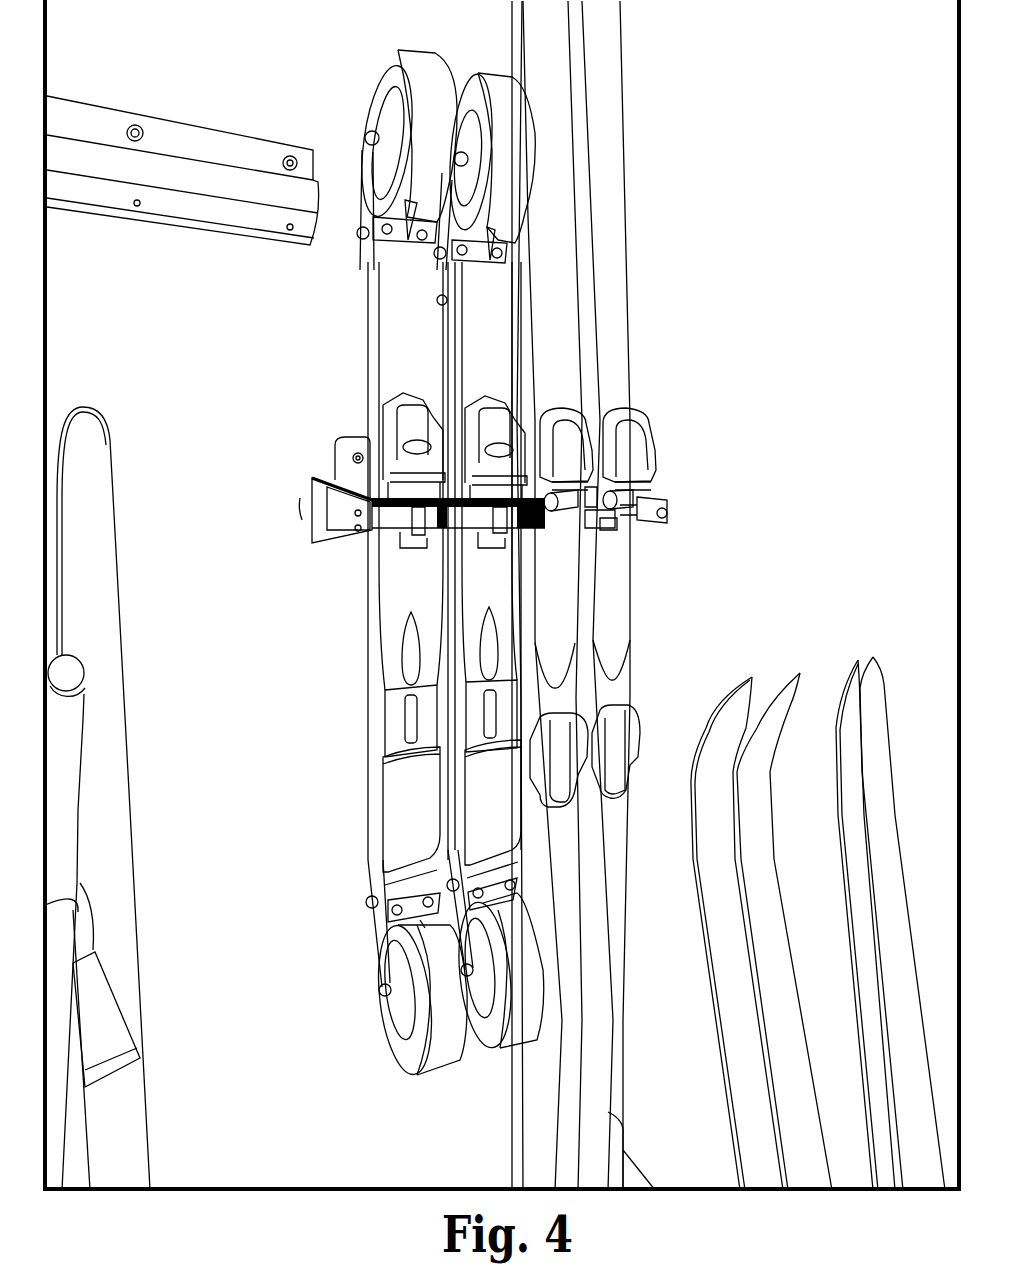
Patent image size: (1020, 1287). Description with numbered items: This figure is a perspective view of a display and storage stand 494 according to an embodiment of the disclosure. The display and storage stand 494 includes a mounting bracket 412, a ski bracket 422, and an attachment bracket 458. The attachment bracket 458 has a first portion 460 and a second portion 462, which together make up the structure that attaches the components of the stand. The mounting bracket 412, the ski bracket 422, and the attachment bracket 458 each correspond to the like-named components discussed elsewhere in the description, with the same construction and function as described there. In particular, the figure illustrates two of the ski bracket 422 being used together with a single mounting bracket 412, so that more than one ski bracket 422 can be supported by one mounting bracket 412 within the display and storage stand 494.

The display and storage stand 494 is at (340, 413).
The mounting bracket 412 is at (348, 478).
The first portion 460 is at (318, 478).
The attachment bracket 458 is at (300, 503).
The second portion 462 is at (326, 520).
The ski bracket 422 is at (342, 507).